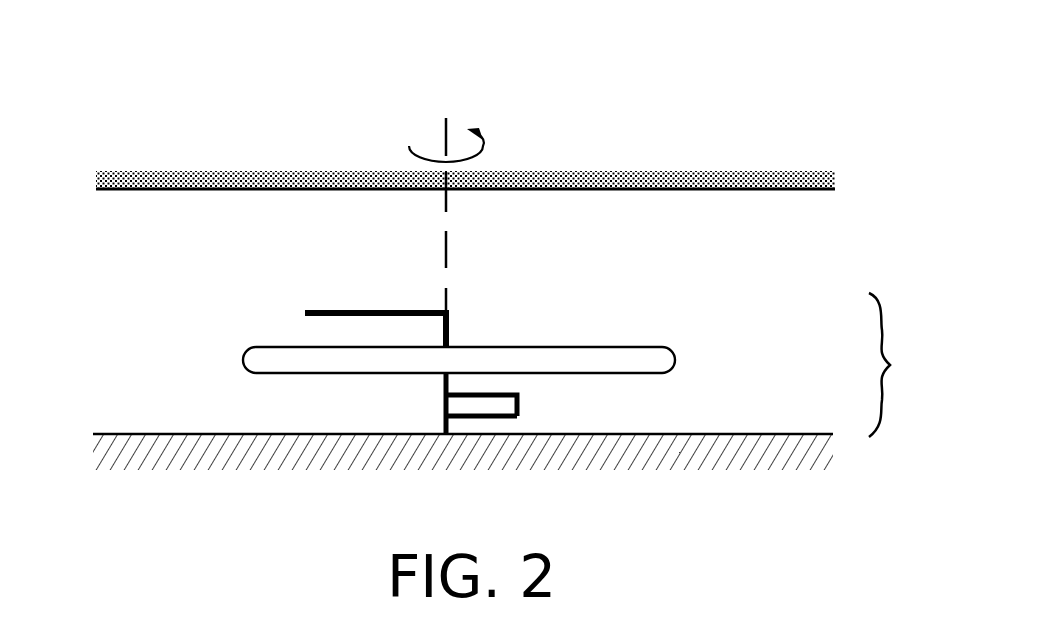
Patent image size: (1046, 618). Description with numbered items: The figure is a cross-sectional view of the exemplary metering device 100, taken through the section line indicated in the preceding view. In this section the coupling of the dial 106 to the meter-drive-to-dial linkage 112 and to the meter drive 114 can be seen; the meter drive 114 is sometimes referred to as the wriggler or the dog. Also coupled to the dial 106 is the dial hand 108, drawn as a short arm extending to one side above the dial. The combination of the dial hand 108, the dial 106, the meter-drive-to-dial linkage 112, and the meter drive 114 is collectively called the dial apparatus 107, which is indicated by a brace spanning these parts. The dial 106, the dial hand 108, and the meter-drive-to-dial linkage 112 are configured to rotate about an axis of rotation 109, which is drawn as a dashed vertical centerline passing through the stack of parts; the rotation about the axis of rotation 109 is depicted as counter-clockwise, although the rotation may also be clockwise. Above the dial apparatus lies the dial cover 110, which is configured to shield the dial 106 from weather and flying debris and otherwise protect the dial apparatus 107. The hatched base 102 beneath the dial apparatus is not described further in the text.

The metering device 100 is at (731, 95).
The substrate / base 102 is at (232, 455).
The dial 106 is at (678, 368).
The dial apparatus 107 is at (906, 365).
The dial hand 108 is at (335, 310).
The axis of rotation 109 is at (446, 200).
The dial cover 110 is at (800, 188).
The meter-drive-to-dial linkage 112 is at (518, 395).
The meter drive 114 is at (518, 416).